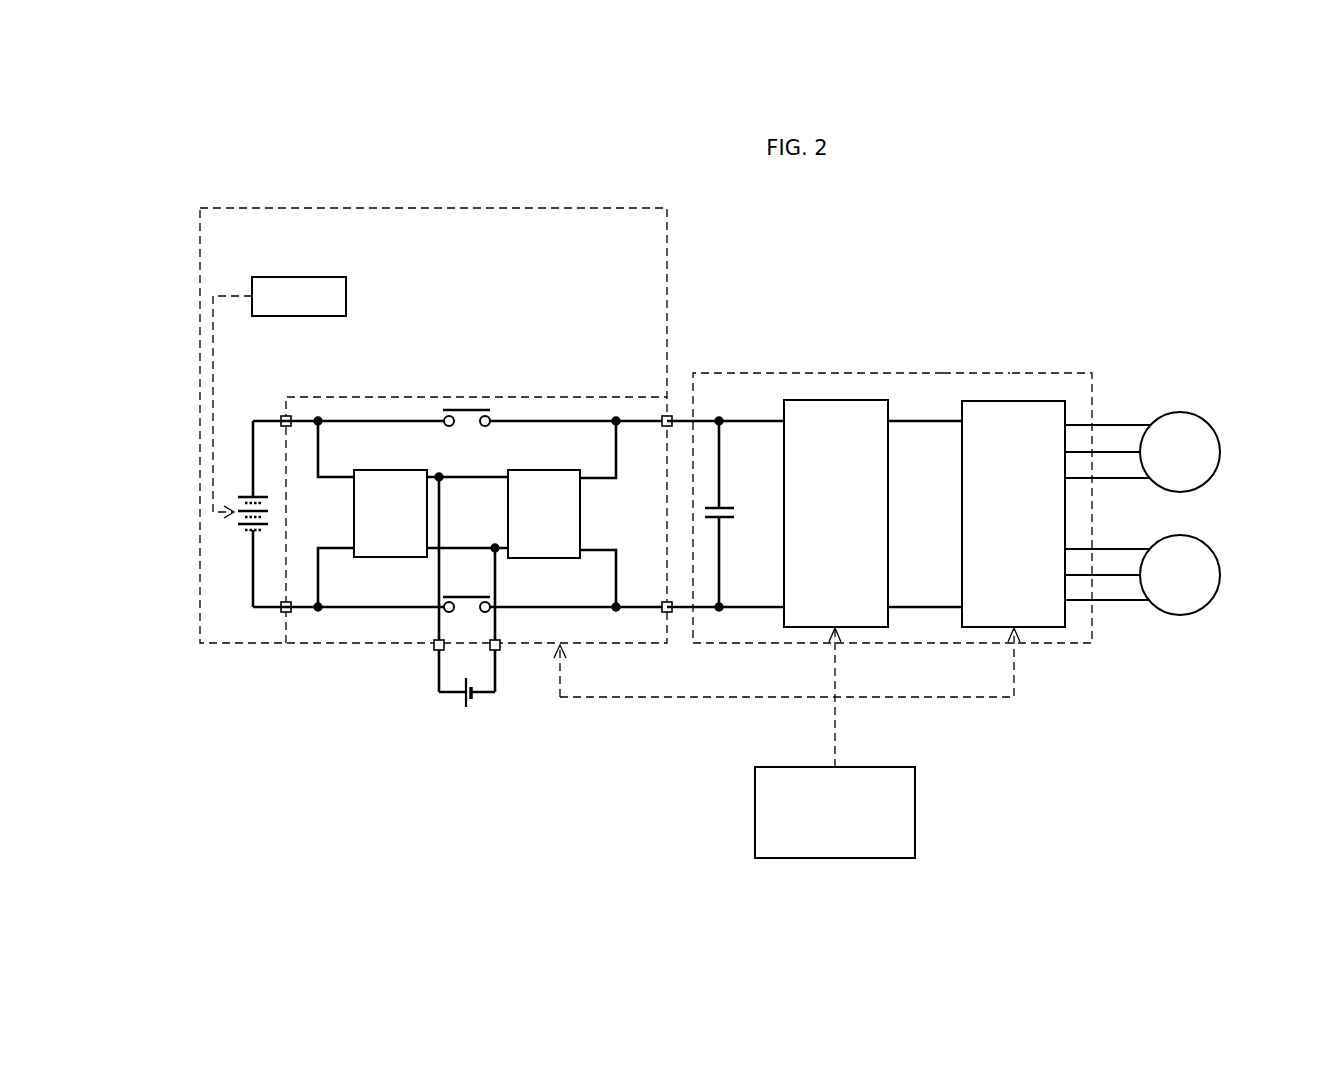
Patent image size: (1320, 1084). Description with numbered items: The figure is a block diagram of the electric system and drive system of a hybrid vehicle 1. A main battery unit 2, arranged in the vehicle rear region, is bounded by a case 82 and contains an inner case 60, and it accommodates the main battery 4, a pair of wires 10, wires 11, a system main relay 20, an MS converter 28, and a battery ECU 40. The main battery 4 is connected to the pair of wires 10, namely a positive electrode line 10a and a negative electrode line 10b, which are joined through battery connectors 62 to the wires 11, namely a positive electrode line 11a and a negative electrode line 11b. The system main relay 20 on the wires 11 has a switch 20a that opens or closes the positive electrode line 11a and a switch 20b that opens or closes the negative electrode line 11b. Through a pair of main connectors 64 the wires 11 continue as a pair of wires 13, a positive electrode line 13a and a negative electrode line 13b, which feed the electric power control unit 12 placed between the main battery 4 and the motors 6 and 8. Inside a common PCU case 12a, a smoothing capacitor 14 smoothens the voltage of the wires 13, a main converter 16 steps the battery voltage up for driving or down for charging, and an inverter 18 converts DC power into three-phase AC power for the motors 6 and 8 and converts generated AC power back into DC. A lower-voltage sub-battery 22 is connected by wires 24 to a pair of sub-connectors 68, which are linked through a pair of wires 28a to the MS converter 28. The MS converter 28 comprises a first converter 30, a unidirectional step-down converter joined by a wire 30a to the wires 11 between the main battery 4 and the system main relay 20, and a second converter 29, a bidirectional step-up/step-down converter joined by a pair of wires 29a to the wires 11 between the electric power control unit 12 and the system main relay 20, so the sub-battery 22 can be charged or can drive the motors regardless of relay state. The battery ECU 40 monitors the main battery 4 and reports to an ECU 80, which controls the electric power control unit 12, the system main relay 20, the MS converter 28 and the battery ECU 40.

The hybrid vehicle 1 is at (1022, 858).
The main battery unit 2 is at (609, 192).
The main battery 4 is at (260, 490).
The motor 6 is at (1210, 424).
The motor 8 is at (1210, 548).
The pair of wires 10 is at (187, 514).
The positive electrode line 10a is at (252, 465).
The negative electrode line 10b is at (252, 555).
The wires 11 is at (460, 460).
The positive electrode line 11a is at (624, 416).
The negative electrode line 11b is at (642, 600).
The electric power control unit 12 is at (887, 352).
The PCU case 12a is at (943, 372).
The pair of wires 13 is at (732, 449).
The positive electrode line 13a is at (733, 416).
The negative electrode line 13b is at (748, 600).
The smoothing capacitor 14 is at (715, 500).
The main converter 16 is at (835, 398).
The inverter 18 is at (1013, 399).
The system main relay 20 is at (485, 450).
The switch 20a is at (451, 414).
The switch 20b is at (478, 592).
The sub-battery 22 is at (460, 702).
The wires 24 is at (495, 668).
The MS converter 28 is at (467, 398).
The pair of wires 28a is at (495, 622).
The second converter 29 is at (555, 467).
The pair of wires 29a is at (600, 547).
The first converter 30 is at (393, 467).
The wire 30a is at (332, 547).
The battery electronic control unit 40 is at (347, 292).
The inner case 60 is at (288, 627).
The battery connectors 62 is at (283, 414).
The main connectors 64 is at (669, 414).
The sub-connectors 68 is at (490, 650).
The electronic control unit 80 is at (916, 809).
The case 82 is at (234, 206).